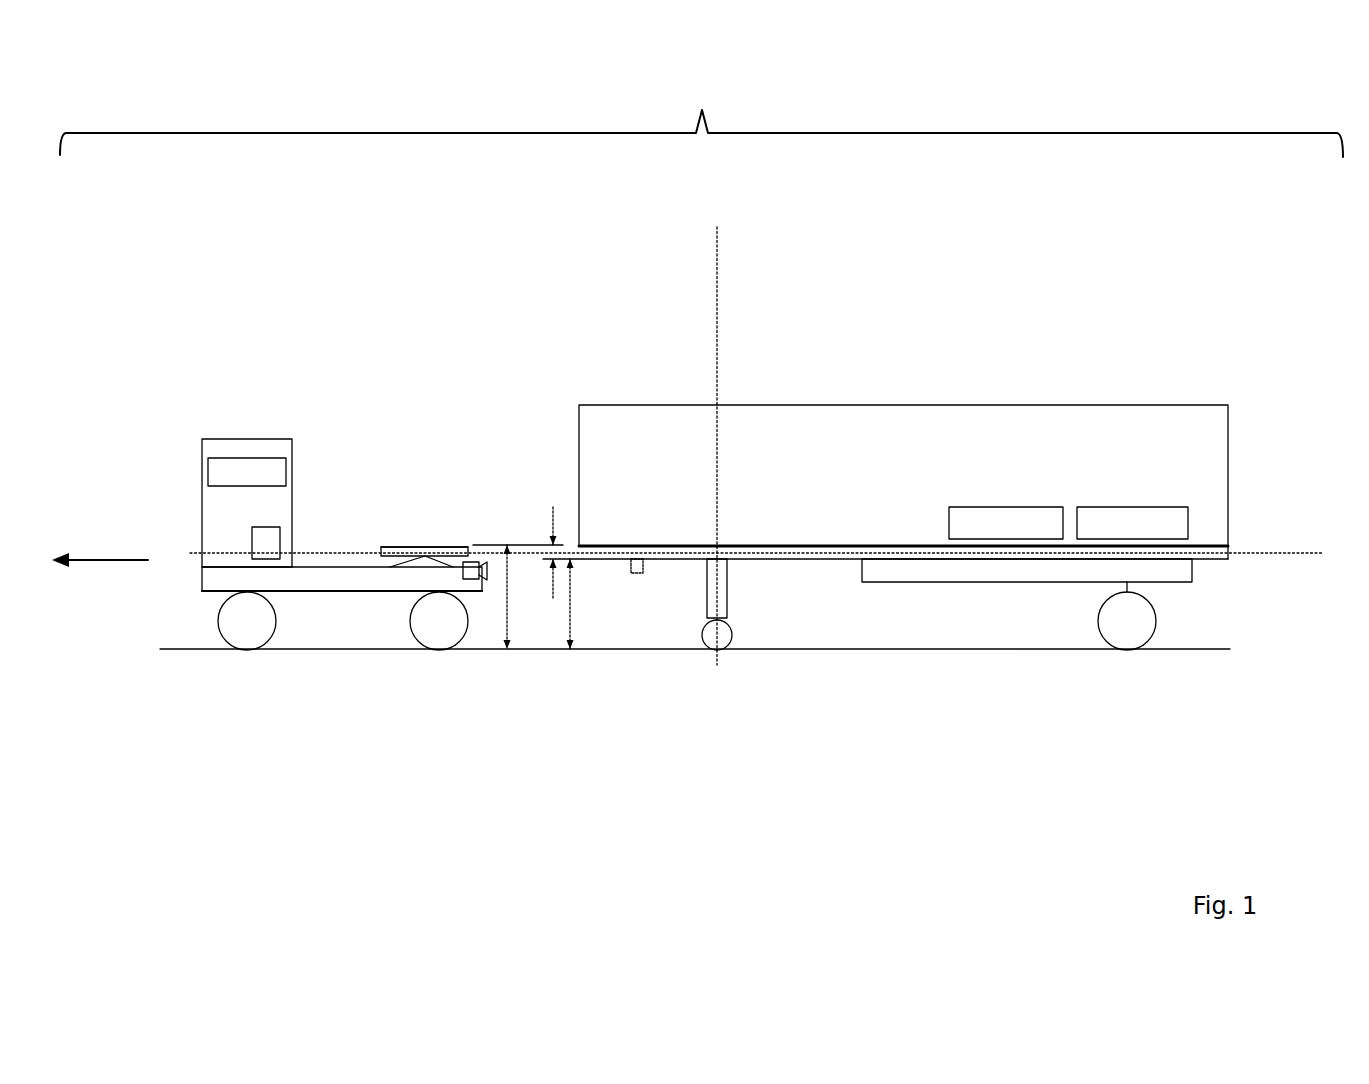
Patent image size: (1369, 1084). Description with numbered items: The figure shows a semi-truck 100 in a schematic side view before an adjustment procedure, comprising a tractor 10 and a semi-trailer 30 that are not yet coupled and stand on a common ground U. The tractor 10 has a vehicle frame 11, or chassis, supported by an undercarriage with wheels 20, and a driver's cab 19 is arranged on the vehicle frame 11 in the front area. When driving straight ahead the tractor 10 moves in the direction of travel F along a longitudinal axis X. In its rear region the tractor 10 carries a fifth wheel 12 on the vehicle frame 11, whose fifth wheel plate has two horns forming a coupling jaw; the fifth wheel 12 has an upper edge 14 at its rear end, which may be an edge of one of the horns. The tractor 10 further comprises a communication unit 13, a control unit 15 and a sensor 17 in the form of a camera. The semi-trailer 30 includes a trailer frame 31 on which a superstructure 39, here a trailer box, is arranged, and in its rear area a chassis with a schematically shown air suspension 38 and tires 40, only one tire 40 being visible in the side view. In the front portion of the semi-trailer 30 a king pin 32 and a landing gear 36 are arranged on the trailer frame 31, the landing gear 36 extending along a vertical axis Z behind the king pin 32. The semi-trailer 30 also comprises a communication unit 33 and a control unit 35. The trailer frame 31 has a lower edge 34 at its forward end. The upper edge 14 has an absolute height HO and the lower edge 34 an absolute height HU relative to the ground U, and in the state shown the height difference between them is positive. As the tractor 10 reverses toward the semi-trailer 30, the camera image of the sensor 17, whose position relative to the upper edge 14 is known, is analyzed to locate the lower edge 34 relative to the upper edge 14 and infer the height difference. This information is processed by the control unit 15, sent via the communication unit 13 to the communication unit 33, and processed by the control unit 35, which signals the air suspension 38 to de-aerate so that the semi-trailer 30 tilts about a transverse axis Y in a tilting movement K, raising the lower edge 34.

The semi-truck 100 is at (701, 117).
The tractor 10 is at (291, 587).
The vehicle frame 11 is at (297, 578).
The fifth wheel 12 is at (417, 553).
The communication unit 13 is at (248, 470).
The upper edge 14 is at (457, 547).
The control unit 15 is at (273, 540).
The sensor 17 is at (483, 580).
The driver's cab 19 is at (208, 446).
The wheels 20 is at (253, 628).
The semi-trailer 30 is at (924, 542).
The trailer frame 31 is at (905, 547).
The king pin 32 is at (638, 573).
The communication unit 33 is at (983, 520).
The lower edge 34 is at (581, 559).
The control unit 35 is at (1112, 517).
The landing gear 36 is at (722, 597).
The air suspension 38 is at (1050, 582).
The superstructure 39 is at (1197, 468).
The tires 40 is at (1127, 620).
The longitudinal axis X is at (1287, 553).
The vertical axis Z is at (717, 276).
The transverse axis Y is at (733, 560).
The tilting movement K is at (755, 546).
The ground U is at (878, 645).
The direction of travel F is at (105, 562).
The absolute height of the upper edge HO is at (510, 603).
The absolute height of the lower edge HU is at (572, 613).